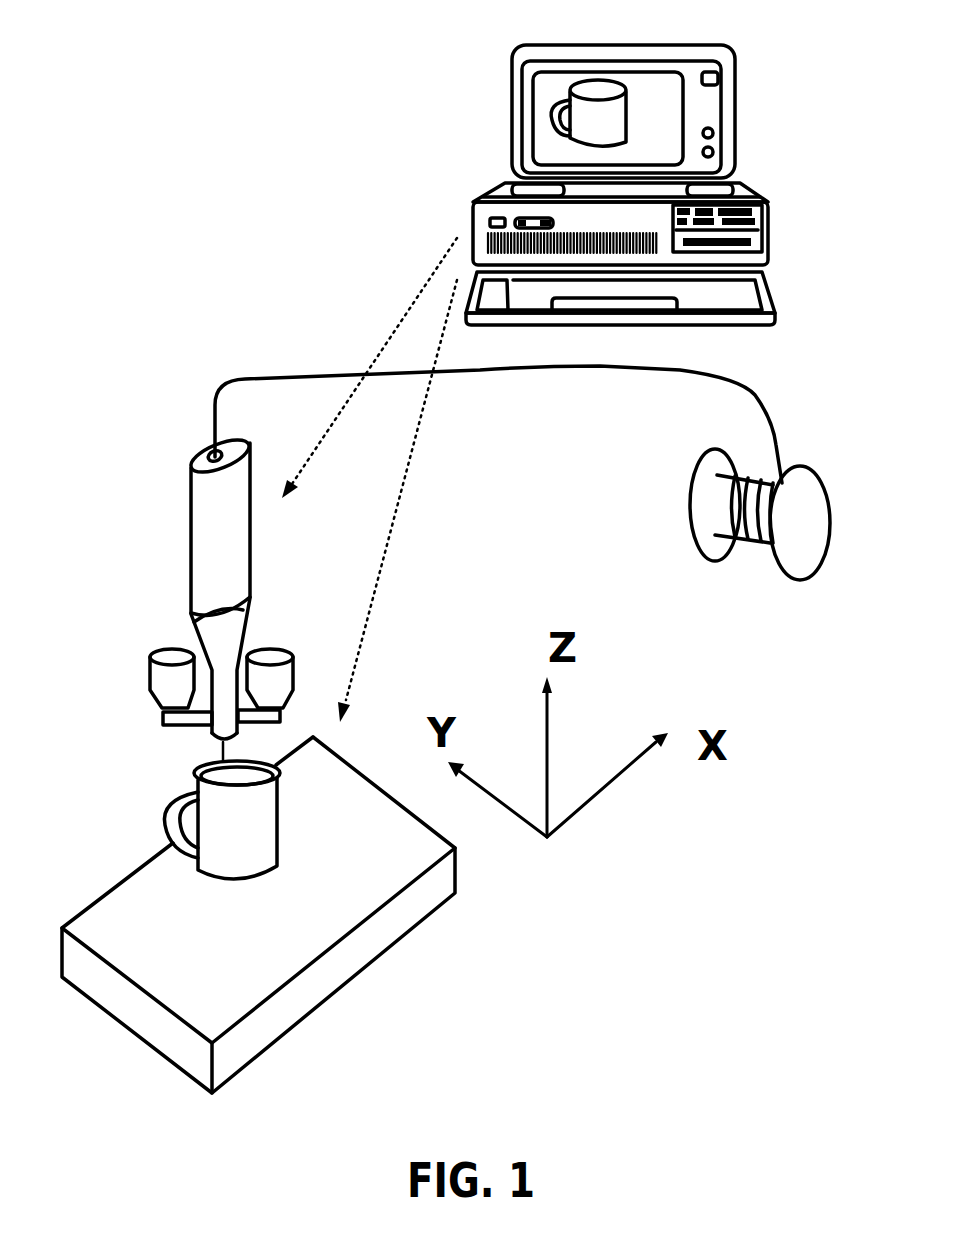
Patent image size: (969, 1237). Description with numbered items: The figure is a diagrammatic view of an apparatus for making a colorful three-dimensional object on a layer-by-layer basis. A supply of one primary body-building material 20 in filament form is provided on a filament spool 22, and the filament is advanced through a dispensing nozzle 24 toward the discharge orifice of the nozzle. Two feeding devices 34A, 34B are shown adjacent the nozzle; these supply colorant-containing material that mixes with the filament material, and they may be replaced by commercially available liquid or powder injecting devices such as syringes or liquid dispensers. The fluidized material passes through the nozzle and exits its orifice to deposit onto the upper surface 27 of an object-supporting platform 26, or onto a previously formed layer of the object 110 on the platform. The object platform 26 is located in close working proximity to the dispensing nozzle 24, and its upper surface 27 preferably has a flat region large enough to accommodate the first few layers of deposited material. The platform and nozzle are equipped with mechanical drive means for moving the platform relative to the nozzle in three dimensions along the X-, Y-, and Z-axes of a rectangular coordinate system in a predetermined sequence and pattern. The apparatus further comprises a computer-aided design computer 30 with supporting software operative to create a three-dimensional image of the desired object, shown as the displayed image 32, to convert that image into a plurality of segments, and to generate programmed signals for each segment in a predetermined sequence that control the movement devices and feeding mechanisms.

The primary body-building material 20 is at (613, 375).
The filament spool 22 is at (813, 537).
The dispensing nozzle 24 is at (222, 731).
The object-supporting platform 26 is at (276, 928).
The upper surface of the platform 27 is at (323, 890).
The computer-aided design computer 30 is at (604, 185).
The displayed image of object 32 is at (598, 110).
The feeding device 34A is at (158, 685).
The feeding device 34B is at (295, 660).
The object 110 is at (245, 860).